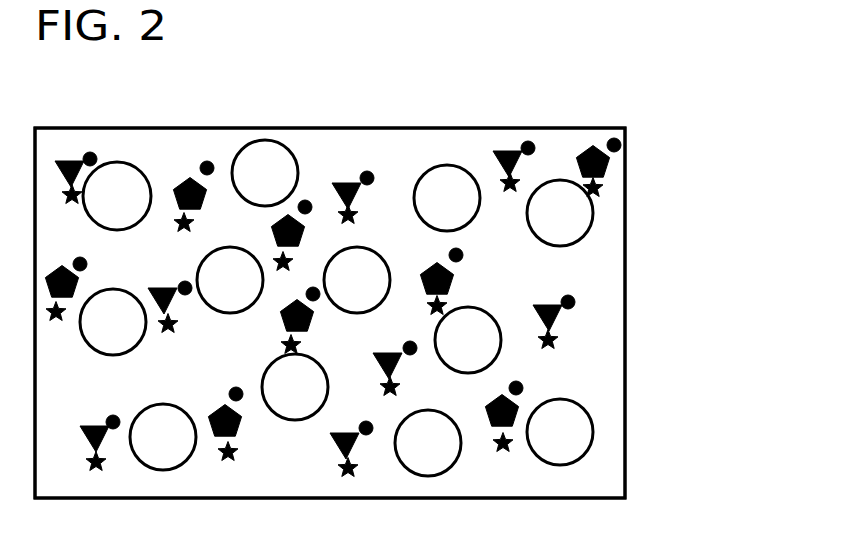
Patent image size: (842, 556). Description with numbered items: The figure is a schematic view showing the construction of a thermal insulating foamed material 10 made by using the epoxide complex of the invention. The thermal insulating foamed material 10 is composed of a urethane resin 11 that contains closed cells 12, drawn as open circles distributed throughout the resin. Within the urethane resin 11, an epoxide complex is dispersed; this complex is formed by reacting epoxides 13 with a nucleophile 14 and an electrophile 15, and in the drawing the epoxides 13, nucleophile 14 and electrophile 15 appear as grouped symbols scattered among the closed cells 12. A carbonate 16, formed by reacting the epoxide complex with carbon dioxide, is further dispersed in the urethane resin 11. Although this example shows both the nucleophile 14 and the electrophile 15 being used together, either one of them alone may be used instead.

The thermal insulating foamed material 10 is at (408, 121).
The urethane resin 11 is at (610, 307).
The closed cells 12 is at (572, 220).
The epoxides 13 is at (560, 323).
The nucleophile 14 is at (621, 143).
The electrophile 15 is at (603, 189).
The carbonate 16 is at (608, 163).